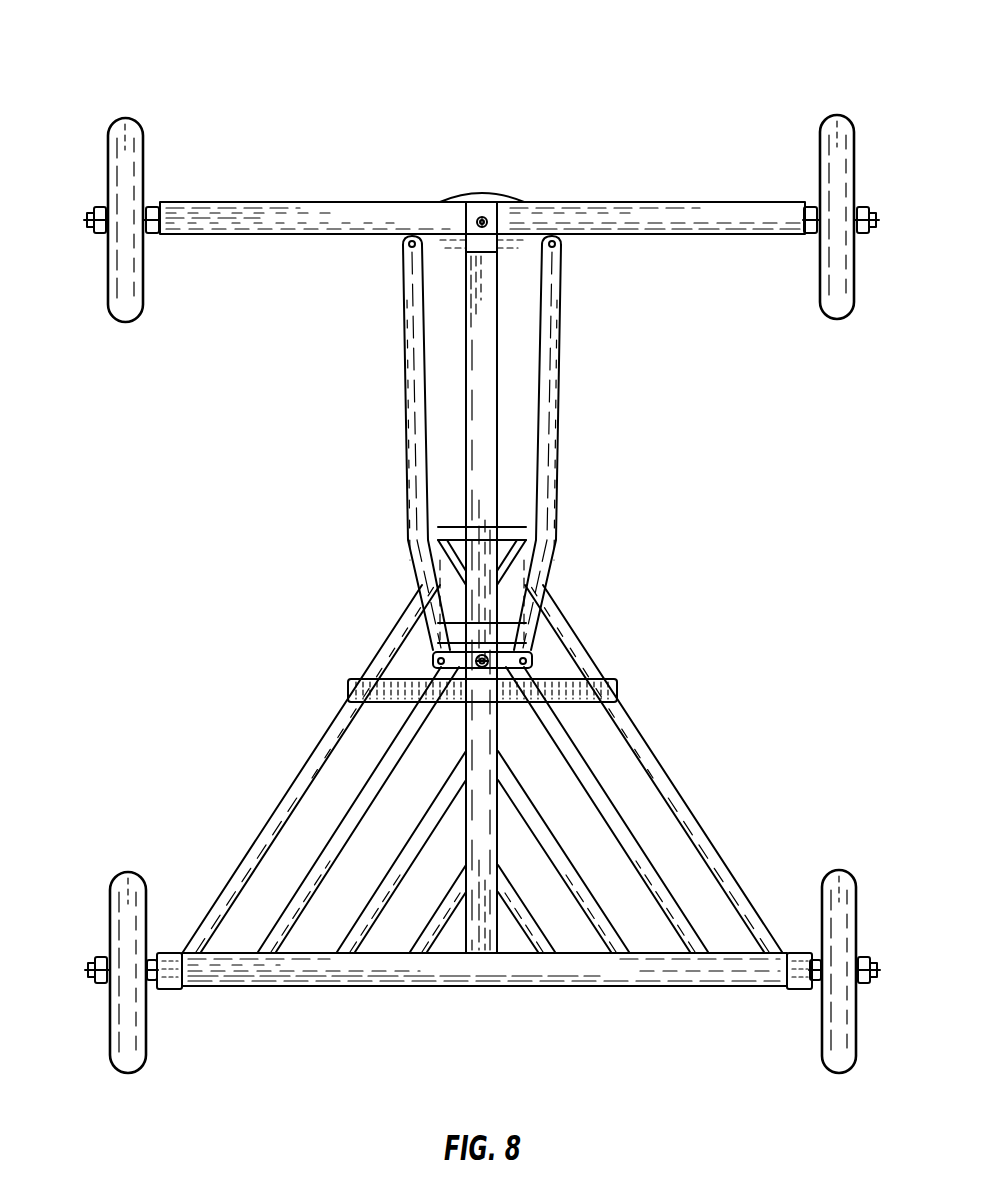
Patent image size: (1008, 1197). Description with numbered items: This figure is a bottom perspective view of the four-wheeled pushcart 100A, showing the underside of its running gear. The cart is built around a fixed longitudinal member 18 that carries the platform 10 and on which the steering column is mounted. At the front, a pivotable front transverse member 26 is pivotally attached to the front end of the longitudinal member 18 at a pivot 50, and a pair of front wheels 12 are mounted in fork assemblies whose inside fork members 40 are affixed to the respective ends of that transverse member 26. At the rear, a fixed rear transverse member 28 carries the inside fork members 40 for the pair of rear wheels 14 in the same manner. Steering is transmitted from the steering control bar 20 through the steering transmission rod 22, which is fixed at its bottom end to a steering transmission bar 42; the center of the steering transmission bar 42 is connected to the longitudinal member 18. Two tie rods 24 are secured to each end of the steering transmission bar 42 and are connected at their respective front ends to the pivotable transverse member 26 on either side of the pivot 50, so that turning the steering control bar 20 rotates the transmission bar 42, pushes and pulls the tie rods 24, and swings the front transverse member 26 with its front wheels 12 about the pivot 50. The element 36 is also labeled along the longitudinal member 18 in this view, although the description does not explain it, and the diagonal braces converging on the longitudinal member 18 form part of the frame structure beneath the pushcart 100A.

The pushcart 100A is at (776, 82).
The platform 10 is at (447, 900).
The front wheels 12 is at (133, 118).
The rear wheels 14 is at (127, 1053).
The longitudinal member 18 is at (480, 870).
The steering control bar 20 is at (611, 678).
The steering transmission rod 22 is at (450, 640).
The tie rods 24 is at (430, 494).
The pivotable front transverse member 26 is at (298, 203).
The fixed rear transverse member 28 is at (344, 988).
The upright member 36 is at (520, 398).
The inside fork members 40 is at (168, 990).
The steering transmission bar 42 is at (500, 656).
The pivot 50 is at (491, 207).